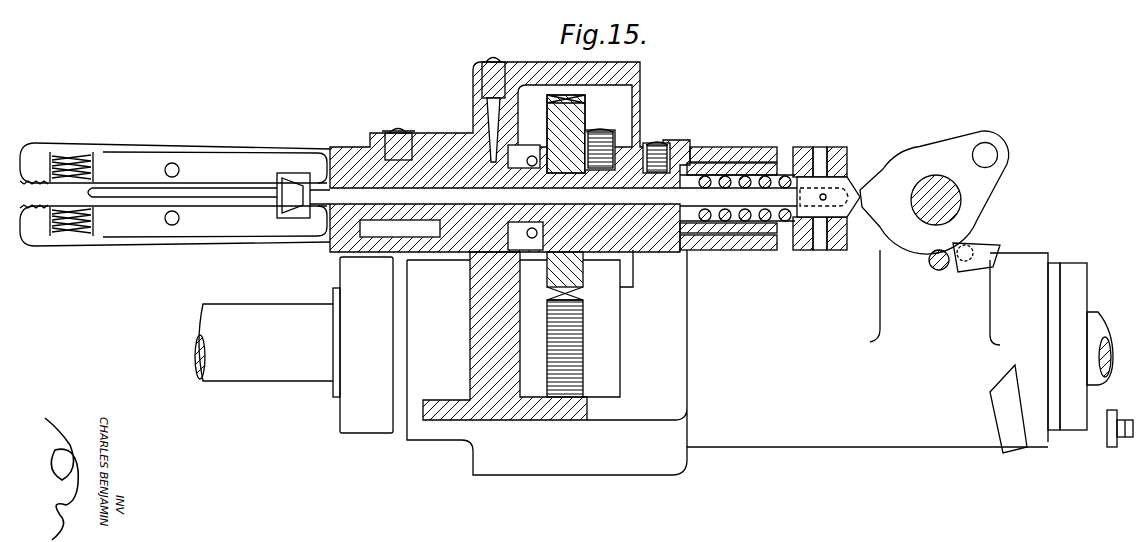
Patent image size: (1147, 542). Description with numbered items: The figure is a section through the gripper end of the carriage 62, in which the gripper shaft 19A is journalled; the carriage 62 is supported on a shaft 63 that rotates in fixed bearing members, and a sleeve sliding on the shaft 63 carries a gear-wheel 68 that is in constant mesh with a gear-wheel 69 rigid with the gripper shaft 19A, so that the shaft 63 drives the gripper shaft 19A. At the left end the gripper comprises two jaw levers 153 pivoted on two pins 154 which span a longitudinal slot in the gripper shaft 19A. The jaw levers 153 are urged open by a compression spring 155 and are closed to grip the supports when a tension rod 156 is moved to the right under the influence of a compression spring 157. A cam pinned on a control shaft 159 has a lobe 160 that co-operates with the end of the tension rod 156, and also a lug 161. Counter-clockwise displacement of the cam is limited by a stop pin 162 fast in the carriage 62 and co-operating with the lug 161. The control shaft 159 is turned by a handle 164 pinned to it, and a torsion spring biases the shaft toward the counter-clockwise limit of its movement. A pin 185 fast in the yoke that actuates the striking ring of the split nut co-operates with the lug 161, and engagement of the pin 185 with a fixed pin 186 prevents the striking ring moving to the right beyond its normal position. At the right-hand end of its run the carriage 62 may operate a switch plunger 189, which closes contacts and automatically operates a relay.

The jaw levers 153 is at (72, 152).
The pins 154 is at (180, 171).
The compression spring 155 is at (90, 193).
The gripper shaft 19A is at (422, 173).
The gear-wheel 69 is at (578, 113).
The tension rod 156 is at (627, 193).
The compression spring 157 is at (732, 172).
The lobe 160 is at (893, 166).
The stop pin 162 is at (988, 163).
The control shaft 159 is at (947, 207).
The lug 161 is at (993, 245).
The fixed pin 186 is at (985, 267).
The pin 185 is at (933, 268).
The shaft 63 is at (272, 318).
The carriage 62 is at (755, 437).
The gear-wheel 68 is at (585, 382).
The handle 164 is at (1003, 447).
The switch plunger 189 is at (1108, 438).